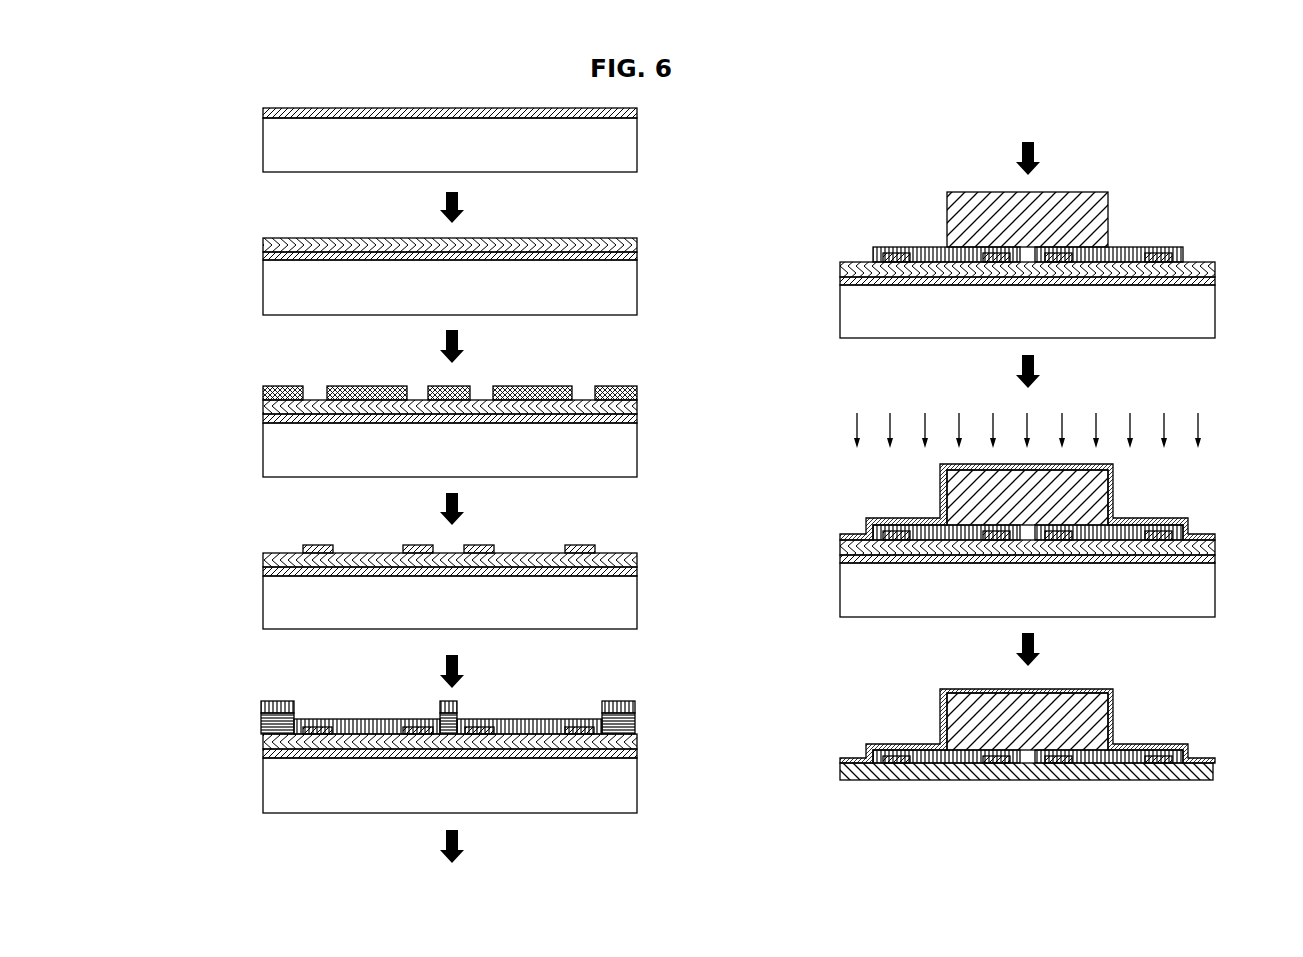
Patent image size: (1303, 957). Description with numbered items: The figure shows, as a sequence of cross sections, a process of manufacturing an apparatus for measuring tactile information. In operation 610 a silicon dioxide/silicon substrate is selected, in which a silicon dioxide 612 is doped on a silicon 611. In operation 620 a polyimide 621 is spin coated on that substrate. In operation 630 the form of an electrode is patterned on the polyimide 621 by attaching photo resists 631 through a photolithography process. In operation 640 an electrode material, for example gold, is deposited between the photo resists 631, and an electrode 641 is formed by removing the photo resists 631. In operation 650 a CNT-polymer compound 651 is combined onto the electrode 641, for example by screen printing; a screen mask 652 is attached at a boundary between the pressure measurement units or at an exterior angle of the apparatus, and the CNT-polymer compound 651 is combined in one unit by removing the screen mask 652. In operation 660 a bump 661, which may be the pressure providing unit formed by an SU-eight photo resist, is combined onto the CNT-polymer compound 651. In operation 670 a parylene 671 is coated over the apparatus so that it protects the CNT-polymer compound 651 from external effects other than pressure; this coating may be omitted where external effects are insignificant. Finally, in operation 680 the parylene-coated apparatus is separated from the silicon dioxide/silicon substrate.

The substrate selecting operation 610 is at (435, 136).
The silicon 611 is at (630, 148).
The silicon dioxide 612 is at (640, 112).
The polyimide spin coating operation 620 is at (435, 274).
The polyimide 621 is at (640, 248).
The electrode patterning operation 630 is at (435, 427).
The photo resists 631 is at (638, 390).
The electrode forming operation 640 is at (415, 569).
The electrode 641 is at (595, 548).
The CNT-polymer compound combining operation 650 is at (435, 736).
The CNT-polymer compound 651 is at (362, 718).
The screen mask 652 is at (636, 725).
The bump combining operation 660 is at (986, 264).
The bump 661 is at (1098, 208).
The parylene coating operation 670 is at (986, 515).
The parylene 671 is at (1115, 483).
The substrate separating operation 680 is at (850, 710).